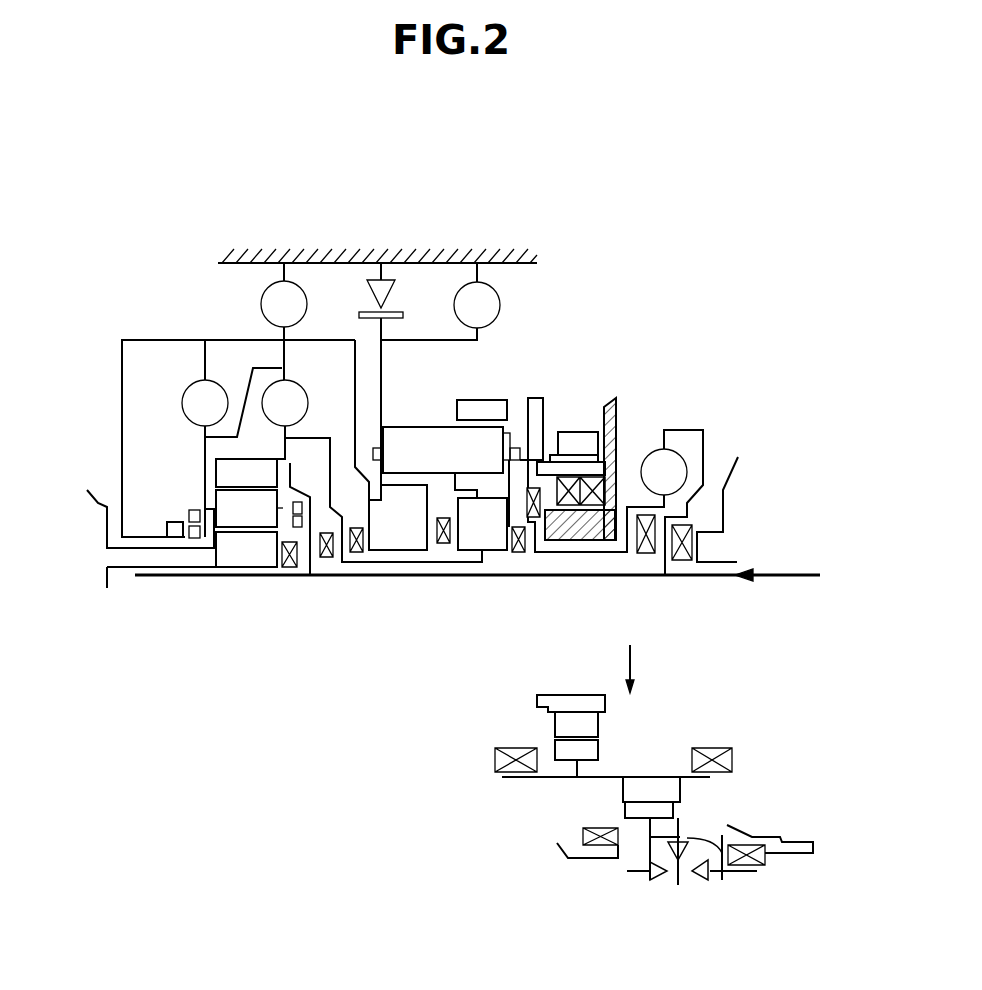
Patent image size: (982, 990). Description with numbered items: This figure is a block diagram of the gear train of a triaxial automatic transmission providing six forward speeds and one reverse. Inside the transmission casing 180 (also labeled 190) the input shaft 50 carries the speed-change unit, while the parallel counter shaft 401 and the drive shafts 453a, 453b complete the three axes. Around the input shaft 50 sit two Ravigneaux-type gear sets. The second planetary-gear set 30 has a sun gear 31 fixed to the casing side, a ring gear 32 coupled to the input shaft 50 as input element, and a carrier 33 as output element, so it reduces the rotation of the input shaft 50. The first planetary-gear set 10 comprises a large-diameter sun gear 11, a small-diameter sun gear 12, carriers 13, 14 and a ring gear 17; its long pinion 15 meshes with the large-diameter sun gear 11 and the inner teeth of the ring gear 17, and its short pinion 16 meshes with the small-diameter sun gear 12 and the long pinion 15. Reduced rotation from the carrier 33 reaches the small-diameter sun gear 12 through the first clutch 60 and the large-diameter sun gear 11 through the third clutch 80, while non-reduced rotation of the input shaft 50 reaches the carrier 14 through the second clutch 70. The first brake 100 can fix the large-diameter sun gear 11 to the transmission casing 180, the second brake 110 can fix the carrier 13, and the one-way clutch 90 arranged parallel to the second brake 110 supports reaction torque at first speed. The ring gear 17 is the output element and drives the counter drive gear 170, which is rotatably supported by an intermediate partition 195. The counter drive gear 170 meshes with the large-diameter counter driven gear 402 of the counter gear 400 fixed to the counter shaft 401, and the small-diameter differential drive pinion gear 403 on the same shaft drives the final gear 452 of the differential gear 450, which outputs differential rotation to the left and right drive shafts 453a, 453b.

The first planetary-gear set 10 is at (438, 505).
The large-diameter sun gear 11 is at (378, 540).
The small-diameter sun gear 12 is at (493, 547).
The carrier 13 is at (383, 385).
The carrier 14 is at (532, 398).
The long pinion 15 is at (424, 437).
The short pinion 16 is at (477, 493).
The ring gear 17 is at (482, 400).
The second planetary-gear set 30 is at (198, 557).
The sun gear 31 is at (262, 573).
The ring gear 32 is at (225, 475).
The carrier 33 is at (202, 497).
The input shaft 50 is at (792, 580).
The first clutch 60 is at (301, 388).
The second clutch 70 is at (658, 447).
The third clutch 80 is at (187, 391).
The one-way clutch 90 is at (383, 282).
The first brake 100 is at (261, 304).
The second brake 110 is at (500, 305).
The counter drive gear 170 is at (576, 432).
The transmission casing 180 is at (406, 221).
The housing 190 is at (468, 262).
The intermediate partition 195 is at (612, 397).
The counter gear 400 is at (590, 739).
The counter shaft 401 is at (508, 778).
The counter driven gear 402 is at (596, 749).
The differential drive pinion gear 403 is at (680, 792).
The differential gear 450 is at (685, 903).
The final gear 452 is at (623, 807).
The drive shaft 453a is at (633, 875).
The drive shaft 453b is at (745, 875).